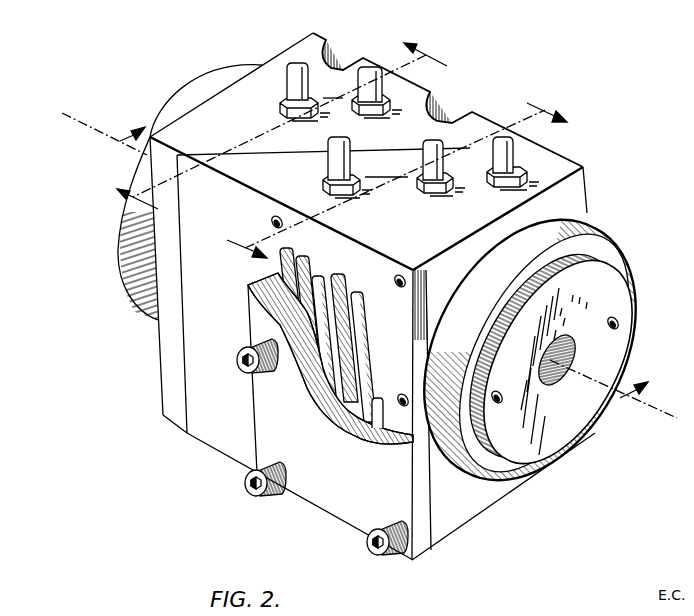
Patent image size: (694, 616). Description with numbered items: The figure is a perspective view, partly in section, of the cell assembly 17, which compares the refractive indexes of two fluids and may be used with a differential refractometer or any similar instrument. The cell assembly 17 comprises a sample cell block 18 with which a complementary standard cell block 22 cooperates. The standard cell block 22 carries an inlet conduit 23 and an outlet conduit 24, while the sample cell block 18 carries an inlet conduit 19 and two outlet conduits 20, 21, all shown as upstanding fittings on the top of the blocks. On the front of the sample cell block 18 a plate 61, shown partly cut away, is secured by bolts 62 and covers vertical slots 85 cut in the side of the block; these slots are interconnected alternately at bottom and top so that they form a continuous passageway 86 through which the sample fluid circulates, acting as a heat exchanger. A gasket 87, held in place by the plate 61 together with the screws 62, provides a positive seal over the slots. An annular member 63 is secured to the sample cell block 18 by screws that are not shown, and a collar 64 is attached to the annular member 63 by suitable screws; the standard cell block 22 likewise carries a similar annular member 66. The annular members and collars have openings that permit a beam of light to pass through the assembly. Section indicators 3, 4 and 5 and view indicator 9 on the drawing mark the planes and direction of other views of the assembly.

The cell assembly 17 is at (215, 460).
The sample cell block 18 is at (570, 172).
The inlet conduit 19 is at (328, 160).
The outlet conduit 20 is at (520, 142).
The outlet conduit 21 is at (422, 160).
The standard cell block 22 is at (292, 48).
The inlet conduit 23 is at (359, 84).
The outlet conduit 24 is at (290, 83).
The plate 61 is at (328, 513).
The bolts 62 is at (240, 353).
The annular member 63 is at (624, 246).
The collar 64 is at (617, 353).
The annular member 66 is at (120, 280).
The vertical slots 85 is at (337, 338).
The continuous passageway 86 is at (341, 284).
The gasket 87 is at (348, 399).
The section line 3- 3 is at (73, 143).
The section line 4- 4 is at (389, 174).
The section line 5- 5 is at (287, 131).
The view direction 9 is at (371, 274).